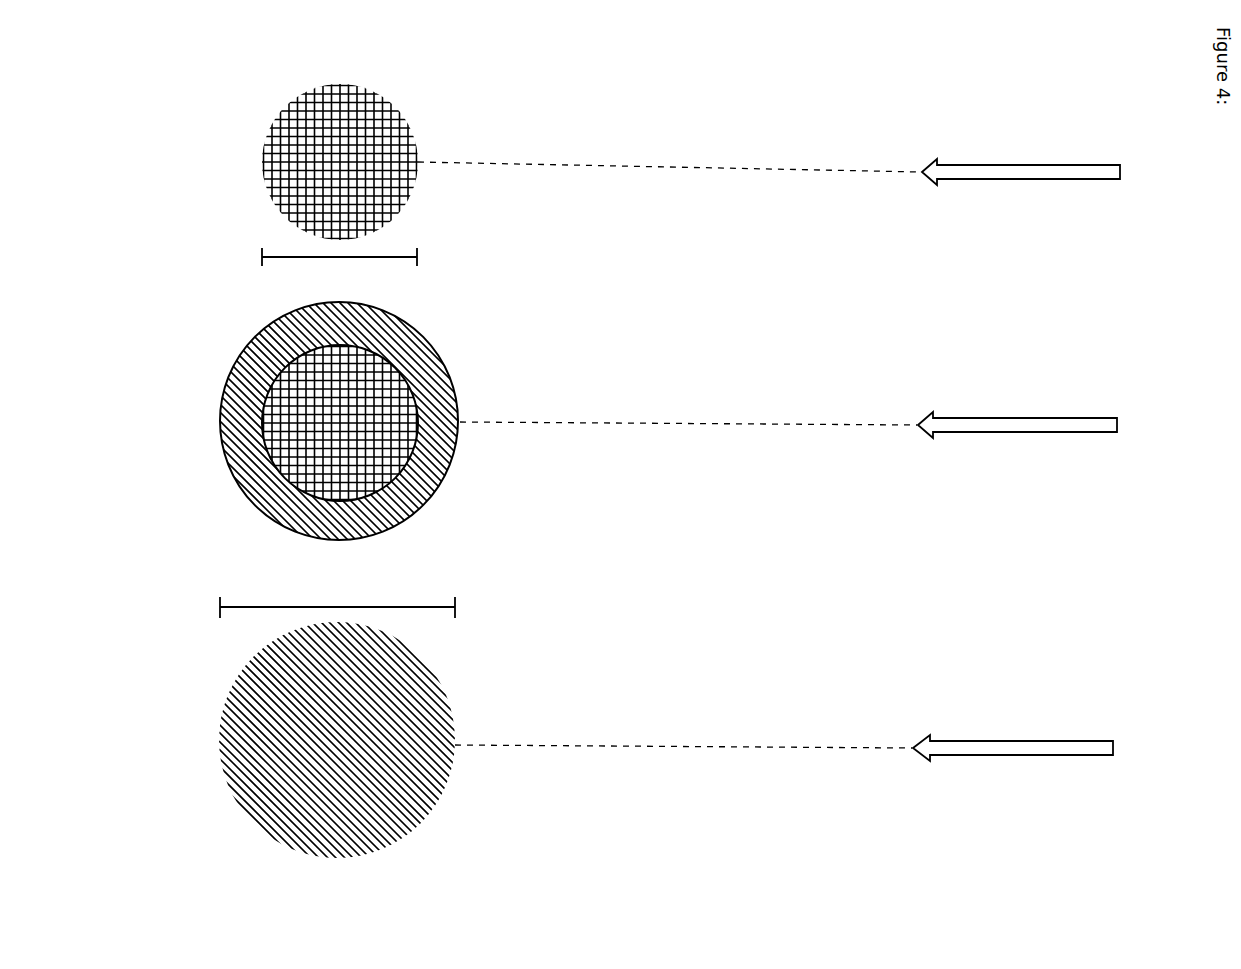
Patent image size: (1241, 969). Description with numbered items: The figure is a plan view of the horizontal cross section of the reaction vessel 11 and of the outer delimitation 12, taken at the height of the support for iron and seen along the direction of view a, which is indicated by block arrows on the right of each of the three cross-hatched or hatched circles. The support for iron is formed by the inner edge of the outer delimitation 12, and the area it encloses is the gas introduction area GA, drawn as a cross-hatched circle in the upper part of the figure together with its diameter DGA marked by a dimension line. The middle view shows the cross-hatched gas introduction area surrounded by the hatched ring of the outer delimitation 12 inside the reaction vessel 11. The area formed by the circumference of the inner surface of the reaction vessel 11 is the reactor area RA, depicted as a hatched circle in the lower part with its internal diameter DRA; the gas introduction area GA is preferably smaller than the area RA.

The gas introduction area GA is at (280, 120).
The diameter of the gas introduction area DGA is at (385, 255).
The reaction vessel 11 is at (220, 425).
The outer delimitation 12 is at (433, 493).
The internal area of the reaction vessel RA is at (412, 733).
The internal diameter of the reactor DRA is at (255, 612).
The direction of view a is at (783, 456).